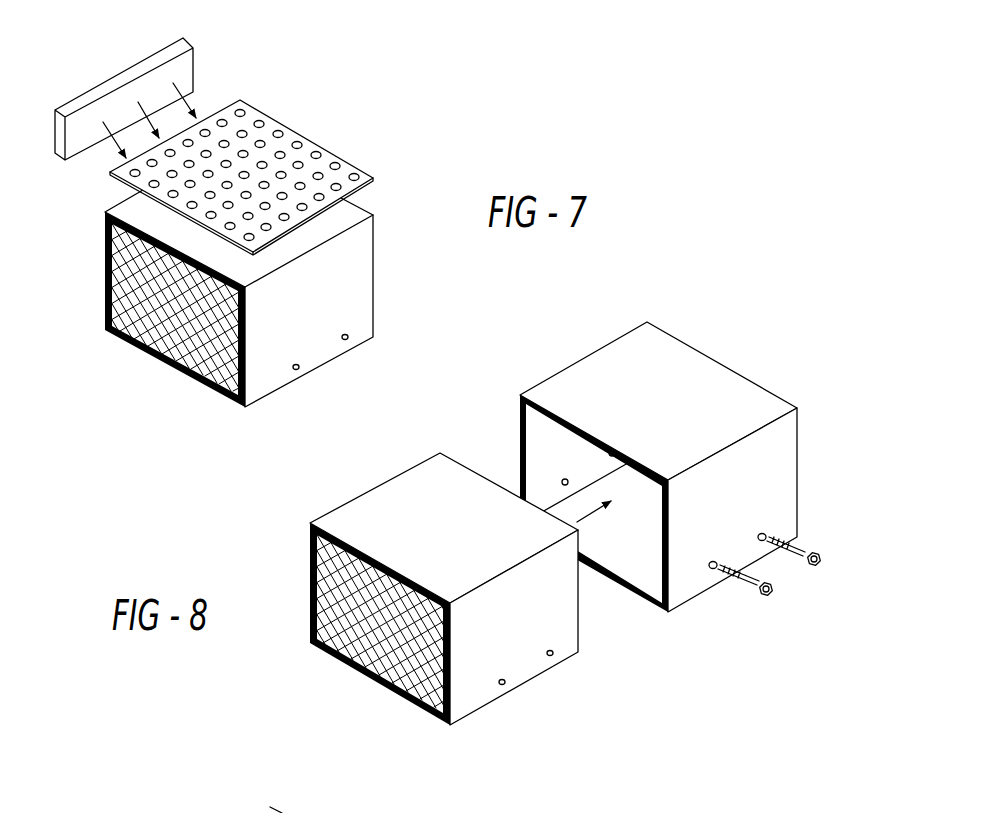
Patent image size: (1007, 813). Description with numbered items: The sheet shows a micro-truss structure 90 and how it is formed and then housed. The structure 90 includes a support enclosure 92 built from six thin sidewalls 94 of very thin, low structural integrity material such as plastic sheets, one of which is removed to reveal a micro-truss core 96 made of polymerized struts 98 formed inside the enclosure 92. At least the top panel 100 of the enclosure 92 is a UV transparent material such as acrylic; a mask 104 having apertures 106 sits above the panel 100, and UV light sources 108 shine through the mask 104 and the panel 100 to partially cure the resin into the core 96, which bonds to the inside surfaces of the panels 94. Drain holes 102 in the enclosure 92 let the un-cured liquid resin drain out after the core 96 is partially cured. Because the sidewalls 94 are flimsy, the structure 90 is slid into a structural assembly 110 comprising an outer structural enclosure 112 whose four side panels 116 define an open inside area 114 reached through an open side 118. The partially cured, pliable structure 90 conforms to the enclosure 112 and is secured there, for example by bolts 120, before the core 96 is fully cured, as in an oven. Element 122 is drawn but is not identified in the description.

In FIG. 7, the micro-truss structure 90 is at (354, 128).
In FIG. 8, the micro-truss structure 90 is at (397, 715).
In FIG. 7, the support enclosure 92 is at (377, 238).
In FIG. 8, the support enclosure 92 is at (305, 583).
In FIG. 7, the sidewalls 94 is at (367, 302).
In FIG. 8, the sidewalls 94 is at (523, 668).
In FIG. 7, the micro-truss core 96 is at (149, 328).
In FIG. 8, the micro-truss core 96 is at (372, 640).
In FIG. 7, the polymerized struts 98 is at (119, 299).
In FIG. 8, the polymerized struts 98 is at (345, 605).
In FIG. 7, the top panel 100 is at (338, 217).
In FIG. 8, the top panel 100 is at (398, 488).
In FIG. 7, the drain holes 102 is at (345, 341).
In FIG. 8, the drain holes 102 is at (503, 685).
In FIG. 7, the mask 104 is at (247, 108).
In FIG. 7, the apertures 106 is at (153, 182).
In FIG. 7, the UV light sources 108 is at (143, 67).
In FIG. 8, the structural assembly 110 is at (754, 348).
In FIG. 8, the outer structural enclosure 112 is at (701, 602).
In FIG. 8, the open inside area 114 is at (647, 557).
In FIG. 8, the side panels 116 is at (770, 487).
In FIG. 8, the open side 118 is at (520, 432).
In FIG. 8, the bolts 120 is at (773, 585).
In FIG. 8, the base 122 is at (282, 812).